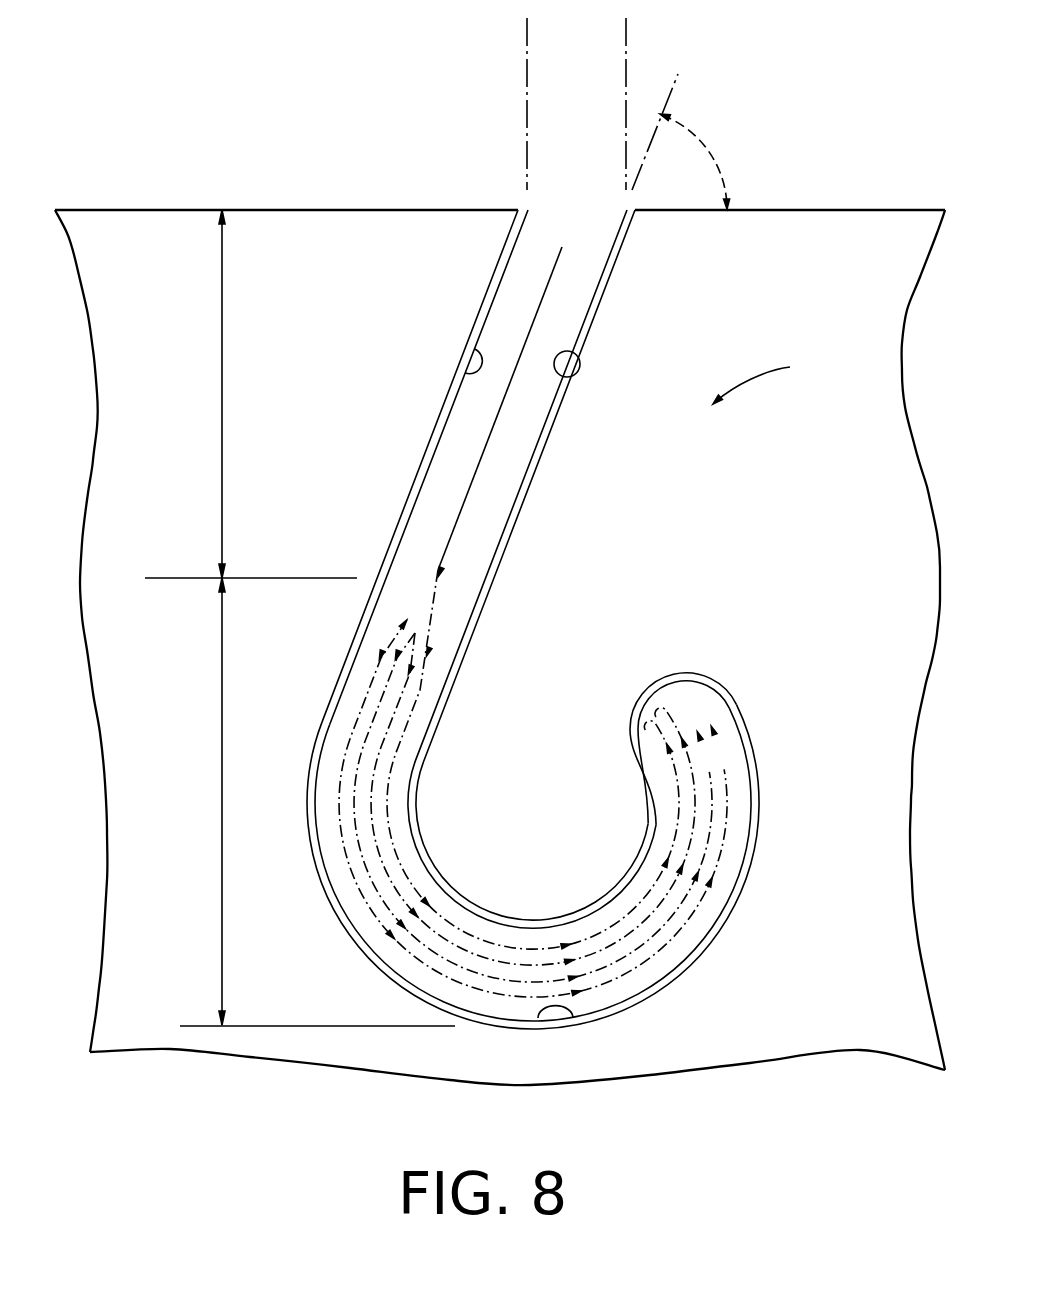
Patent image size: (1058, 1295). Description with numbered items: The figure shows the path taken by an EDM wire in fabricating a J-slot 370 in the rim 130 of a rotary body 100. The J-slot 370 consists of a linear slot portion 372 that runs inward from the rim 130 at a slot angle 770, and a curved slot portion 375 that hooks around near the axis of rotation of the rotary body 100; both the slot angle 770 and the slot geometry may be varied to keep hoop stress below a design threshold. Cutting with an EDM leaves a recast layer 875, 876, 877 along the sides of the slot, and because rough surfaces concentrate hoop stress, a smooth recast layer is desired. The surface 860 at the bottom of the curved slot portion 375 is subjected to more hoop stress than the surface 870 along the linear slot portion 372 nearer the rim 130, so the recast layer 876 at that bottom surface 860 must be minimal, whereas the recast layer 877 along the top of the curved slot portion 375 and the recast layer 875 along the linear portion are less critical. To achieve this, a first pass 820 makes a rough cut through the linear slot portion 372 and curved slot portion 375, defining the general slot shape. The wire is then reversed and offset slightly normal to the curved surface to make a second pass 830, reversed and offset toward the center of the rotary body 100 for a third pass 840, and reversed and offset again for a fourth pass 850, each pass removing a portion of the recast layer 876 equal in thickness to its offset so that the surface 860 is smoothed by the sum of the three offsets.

The rotary body 100 is at (681, 549).
The rim 130 is at (294, 209).
The J-slot 370 is at (780, 376).
The linear slot portion 372 is at (221, 384).
The curved slot portion 375 is at (221, 802).
The slot angle 770 is at (698, 137).
The first pass 820 is at (487, 445).
The second pass 830 is at (690, 843).
The third pass 840 is at (713, 843).
The fourth pass 850 is at (690, 914).
The surface 860 is at (545, 1022).
The surface 870 is at (462, 379).
The recast layer 875 is at (415, 483).
The recast layer 876 is at (646, 999).
The recast layer 877 is at (539, 918).